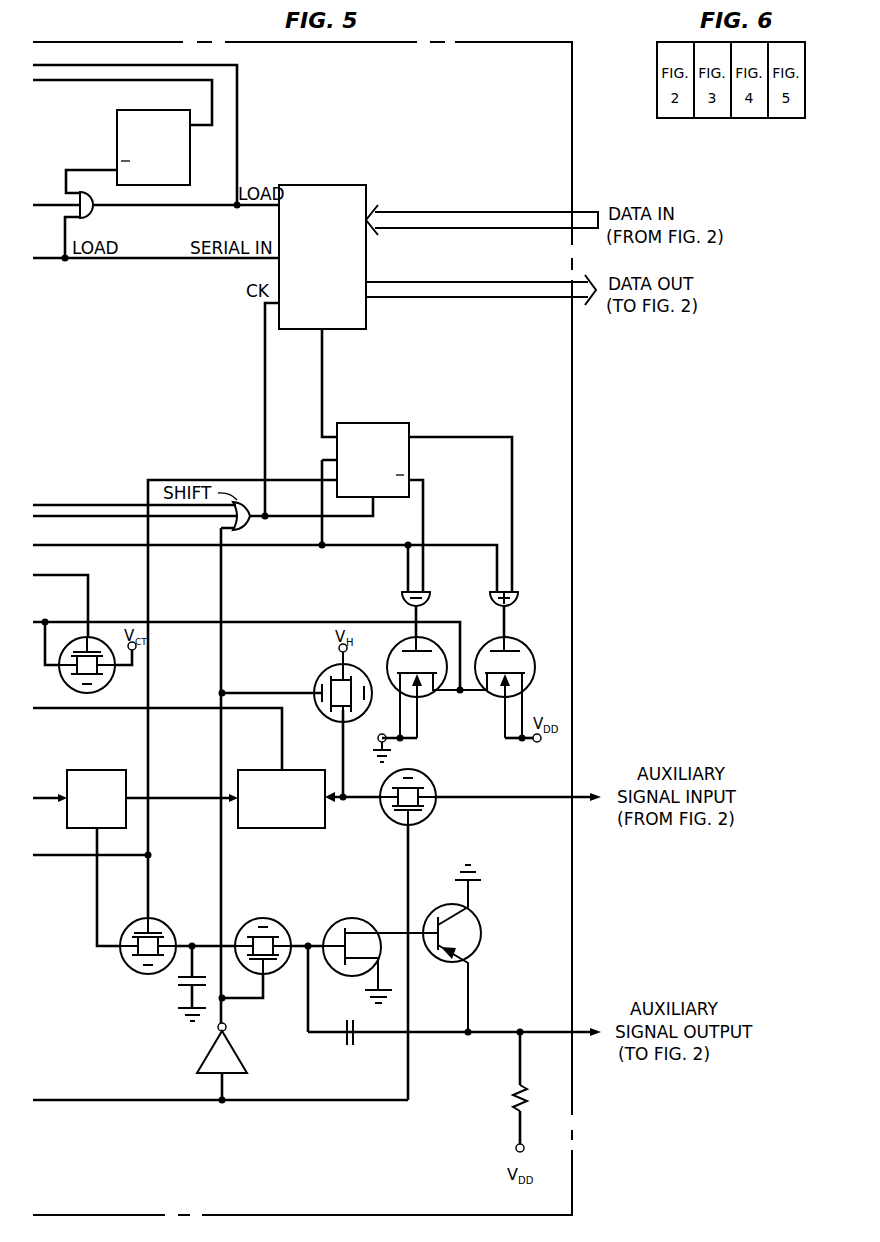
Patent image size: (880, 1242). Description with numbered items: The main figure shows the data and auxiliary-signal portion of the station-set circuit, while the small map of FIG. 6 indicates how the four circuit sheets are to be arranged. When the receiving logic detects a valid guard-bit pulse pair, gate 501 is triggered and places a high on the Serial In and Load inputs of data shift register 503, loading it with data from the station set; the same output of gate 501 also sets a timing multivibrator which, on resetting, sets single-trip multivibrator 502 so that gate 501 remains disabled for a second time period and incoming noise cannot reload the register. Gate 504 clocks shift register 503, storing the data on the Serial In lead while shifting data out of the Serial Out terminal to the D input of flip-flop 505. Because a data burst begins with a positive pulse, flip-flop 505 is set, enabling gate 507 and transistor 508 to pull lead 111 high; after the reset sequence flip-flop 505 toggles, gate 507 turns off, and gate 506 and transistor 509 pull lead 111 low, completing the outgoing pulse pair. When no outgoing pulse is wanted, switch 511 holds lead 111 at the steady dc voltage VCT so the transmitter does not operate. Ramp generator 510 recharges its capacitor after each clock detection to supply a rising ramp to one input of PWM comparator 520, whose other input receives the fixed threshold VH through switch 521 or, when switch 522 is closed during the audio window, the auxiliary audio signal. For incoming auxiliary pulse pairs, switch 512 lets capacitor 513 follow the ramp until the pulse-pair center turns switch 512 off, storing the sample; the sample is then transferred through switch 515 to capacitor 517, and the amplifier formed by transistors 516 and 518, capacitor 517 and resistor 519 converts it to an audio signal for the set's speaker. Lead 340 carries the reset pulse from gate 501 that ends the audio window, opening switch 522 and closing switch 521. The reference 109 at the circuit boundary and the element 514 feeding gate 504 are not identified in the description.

The auxiliary signal processing circuit 109 is at (572, 395).
The lead 111 is at (248, 622).
The lead 340 is at (237, 95).
The gate 501 is at (85, 219).
The single-trip multivibrator 502 is at (117, 120).
The data shift register 503 is at (340, 185).
The gate 504 is at (245, 527).
The flip-flop 505 is at (396, 423).
The gate 506 is at (402, 595).
The gate 507 is at (490, 595).
The transistor 508 is at (532, 648).
The transistor 509 is at (425, 694).
The ramp generator 510 is at (90, 770).
The switch 511 is at (108, 685).
The switch 512 is at (163, 920).
The capacitor 513 is at (178, 981).
The inverter 514 is at (207, 1050).
The switch 515 is at (262, 918).
The transistor 516 is at (352, 918).
The capacitor 517 is at (350, 1048).
The transistor 518 is at (478, 918).
The resistor 519 is at (513, 1100).
The PWM comparator 520 is at (252, 770).
The switch 521 is at (323, 677).
The switch 522 is at (432, 780).